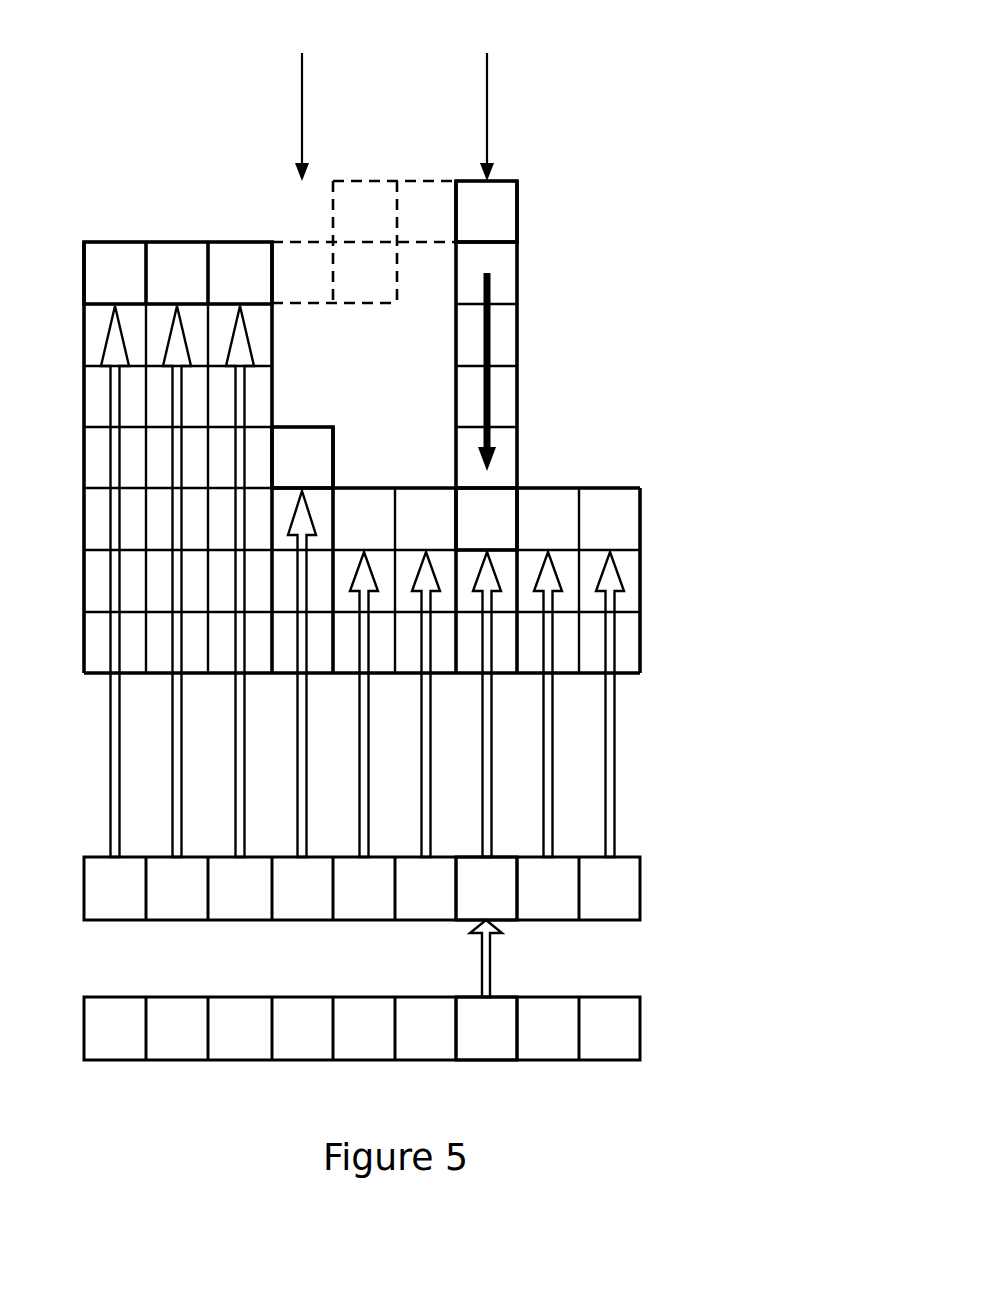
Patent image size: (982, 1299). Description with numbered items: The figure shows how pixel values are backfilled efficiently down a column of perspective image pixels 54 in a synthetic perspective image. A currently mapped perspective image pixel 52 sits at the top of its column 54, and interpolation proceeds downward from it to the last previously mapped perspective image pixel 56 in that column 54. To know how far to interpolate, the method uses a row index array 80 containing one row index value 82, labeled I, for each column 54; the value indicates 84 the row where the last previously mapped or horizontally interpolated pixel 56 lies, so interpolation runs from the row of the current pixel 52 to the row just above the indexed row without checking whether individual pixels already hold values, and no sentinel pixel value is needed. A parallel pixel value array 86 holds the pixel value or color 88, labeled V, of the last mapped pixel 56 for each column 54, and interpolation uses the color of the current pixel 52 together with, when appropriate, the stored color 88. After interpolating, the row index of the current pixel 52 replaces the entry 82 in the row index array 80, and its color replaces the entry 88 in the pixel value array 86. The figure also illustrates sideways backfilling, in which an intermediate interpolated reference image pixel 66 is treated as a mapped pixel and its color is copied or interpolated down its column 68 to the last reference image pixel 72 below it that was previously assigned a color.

The currently mapped perspective image pixel 52 is at (503, 203).
The column of perspective image pixels 54 is at (478, 94).
The last previously mapped perspective image pixel 56 is at (487, 518).
The intermediate interpolated reference image pixel 66 is at (302, 273).
The column 68 is at (293, 94).
The last reference image pixel 72 is at (293, 465).
The row index array 80 is at (640, 892).
The row index value 82 is at (507, 897).
The indication of last mapped pixel location 84 is at (488, 752).
The pixel value array 86 is at (640, 1032).
The pixel value 88 is at (507, 1037).